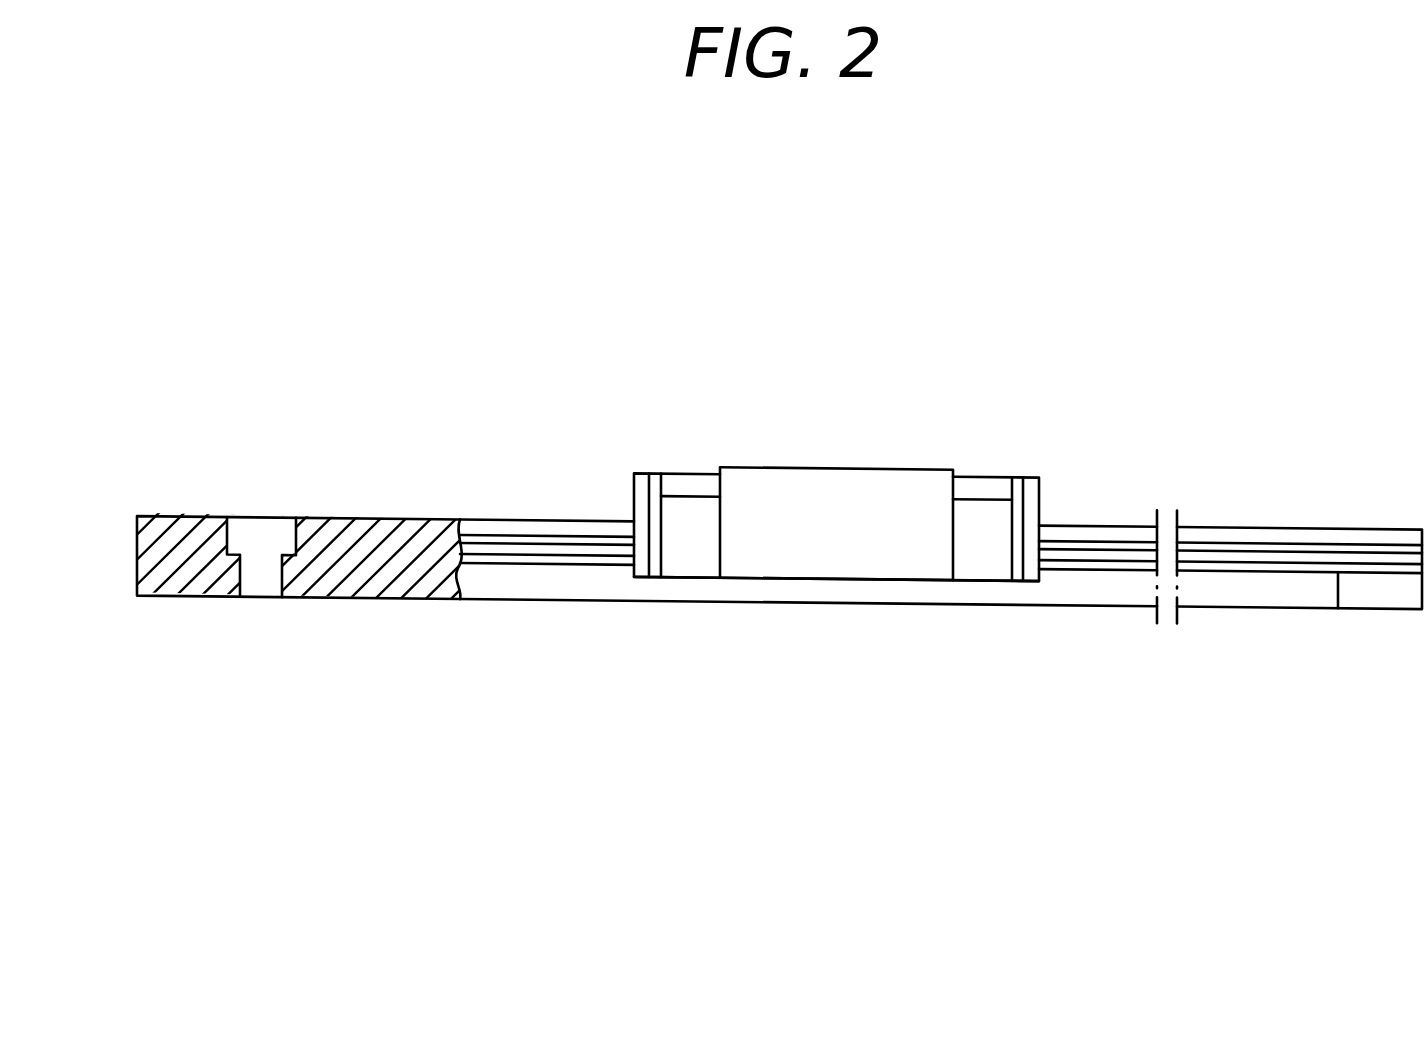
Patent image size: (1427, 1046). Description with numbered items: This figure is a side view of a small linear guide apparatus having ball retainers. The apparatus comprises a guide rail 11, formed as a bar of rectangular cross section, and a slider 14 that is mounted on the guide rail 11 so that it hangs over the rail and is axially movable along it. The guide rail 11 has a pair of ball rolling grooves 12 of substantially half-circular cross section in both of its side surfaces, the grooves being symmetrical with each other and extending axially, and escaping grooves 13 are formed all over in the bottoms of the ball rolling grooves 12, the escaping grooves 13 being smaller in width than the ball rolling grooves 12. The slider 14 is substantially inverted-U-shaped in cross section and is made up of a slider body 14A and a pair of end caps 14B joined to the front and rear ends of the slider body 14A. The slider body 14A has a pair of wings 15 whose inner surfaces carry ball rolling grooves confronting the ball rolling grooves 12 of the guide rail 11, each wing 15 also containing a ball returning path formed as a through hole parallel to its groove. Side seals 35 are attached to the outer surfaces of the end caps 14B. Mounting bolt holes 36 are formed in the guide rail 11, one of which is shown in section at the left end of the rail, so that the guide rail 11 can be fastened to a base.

The guide rail 11 is at (943, 543).
The ball rolling grooves 12 is at (1338, 608).
The escaping grooves 13 is at (1383, 553).
The slider 14 is at (820, 539).
The slider body 14A is at (749, 518).
The end caps 14B is at (680, 487).
The wings 15 is at (904, 554).
The side seals 35 is at (640, 570).
The mounting bolt holes 36 is at (262, 553).